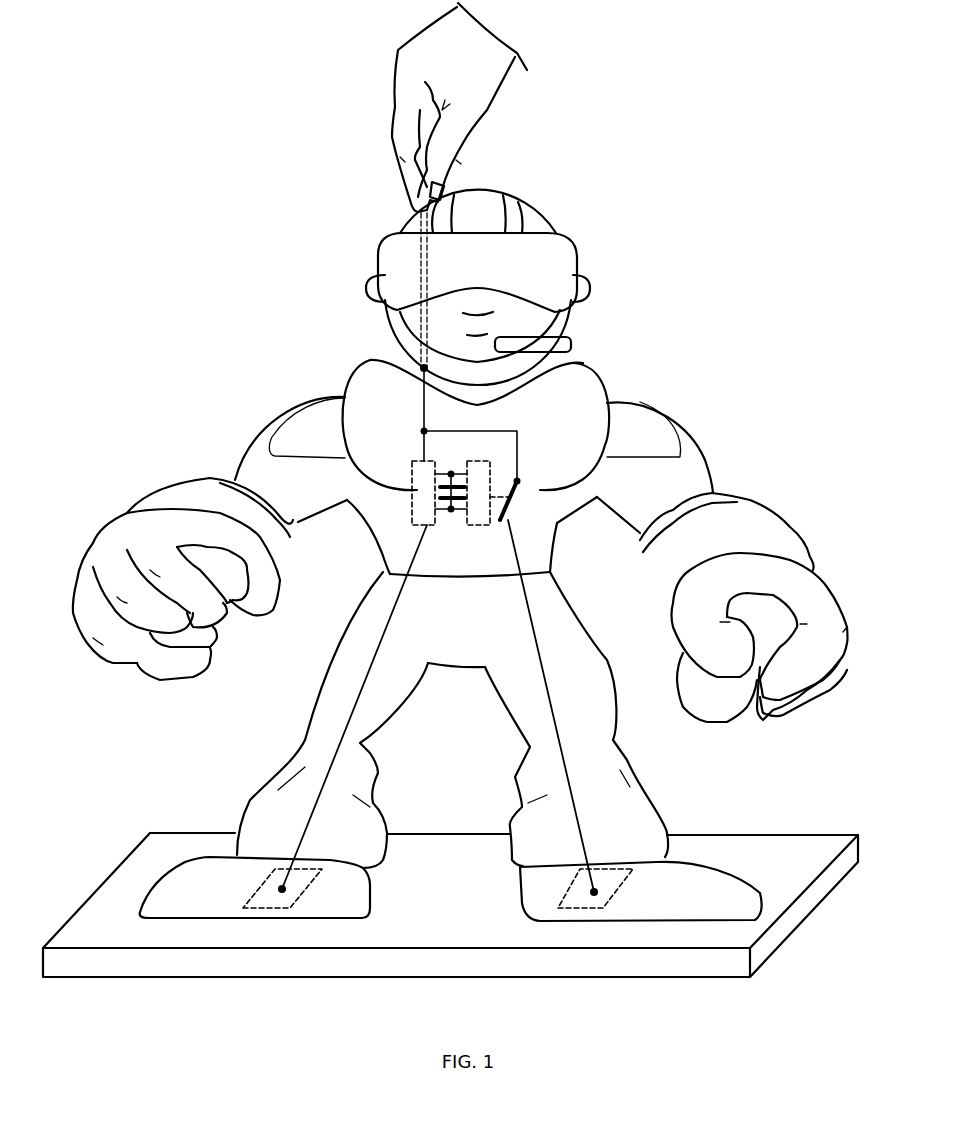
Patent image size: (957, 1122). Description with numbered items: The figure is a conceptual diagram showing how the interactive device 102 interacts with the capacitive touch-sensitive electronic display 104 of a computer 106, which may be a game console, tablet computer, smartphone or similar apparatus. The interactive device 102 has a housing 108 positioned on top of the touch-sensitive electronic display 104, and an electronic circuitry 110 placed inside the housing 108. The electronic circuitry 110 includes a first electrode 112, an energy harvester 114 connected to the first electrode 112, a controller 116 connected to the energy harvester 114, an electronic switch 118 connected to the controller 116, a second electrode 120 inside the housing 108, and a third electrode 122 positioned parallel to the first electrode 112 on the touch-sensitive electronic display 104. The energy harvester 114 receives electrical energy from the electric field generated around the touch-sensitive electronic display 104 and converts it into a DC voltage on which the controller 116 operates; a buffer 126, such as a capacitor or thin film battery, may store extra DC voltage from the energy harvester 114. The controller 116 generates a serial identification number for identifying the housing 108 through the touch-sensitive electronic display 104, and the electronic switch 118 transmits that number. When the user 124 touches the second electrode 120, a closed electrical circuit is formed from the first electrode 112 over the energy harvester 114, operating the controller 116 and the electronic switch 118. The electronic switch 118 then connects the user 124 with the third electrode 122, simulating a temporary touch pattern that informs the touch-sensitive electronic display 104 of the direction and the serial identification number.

The interactive device 102 is at (686, 86).
The touch-sensitive electronic display 104 is at (753, 842).
The computer 106 is at (807, 945).
The housing 108 is at (662, 407).
The electronic circuitry 110 is at (396, 537).
The first electrode 112 is at (300, 886).
The energy harvester 114 is at (418, 493).
The controller 116 is at (485, 473).
The electronic switch 118 is at (513, 500).
The second electrode 120 is at (423, 366).
The third electrode 122 is at (570, 901).
The user 124 is at (458, 512).
The buffer 126 is at (392, 110).